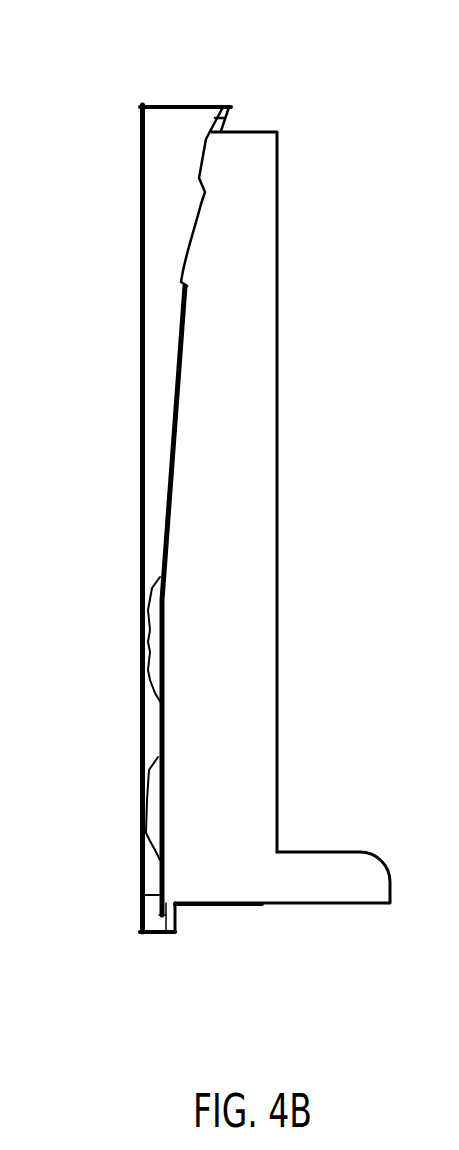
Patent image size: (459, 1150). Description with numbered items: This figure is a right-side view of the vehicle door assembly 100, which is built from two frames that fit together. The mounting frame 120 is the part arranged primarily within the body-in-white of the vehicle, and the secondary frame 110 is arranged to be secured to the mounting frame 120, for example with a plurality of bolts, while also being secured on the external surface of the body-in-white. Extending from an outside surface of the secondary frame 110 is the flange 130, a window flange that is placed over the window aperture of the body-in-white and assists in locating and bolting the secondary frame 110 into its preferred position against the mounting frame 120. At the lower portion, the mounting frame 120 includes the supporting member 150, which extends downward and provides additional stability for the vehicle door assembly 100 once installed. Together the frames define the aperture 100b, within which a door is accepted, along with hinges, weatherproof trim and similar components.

The vehicle door assembly 100 is at (118, 78).
The aperture 100b is at (100, 715).
The secondary frame 110 is at (140, 246).
The mounting frame 120 is at (277, 347).
The flange 130 is at (175, 438).
The supporting member 150 is at (334, 868).